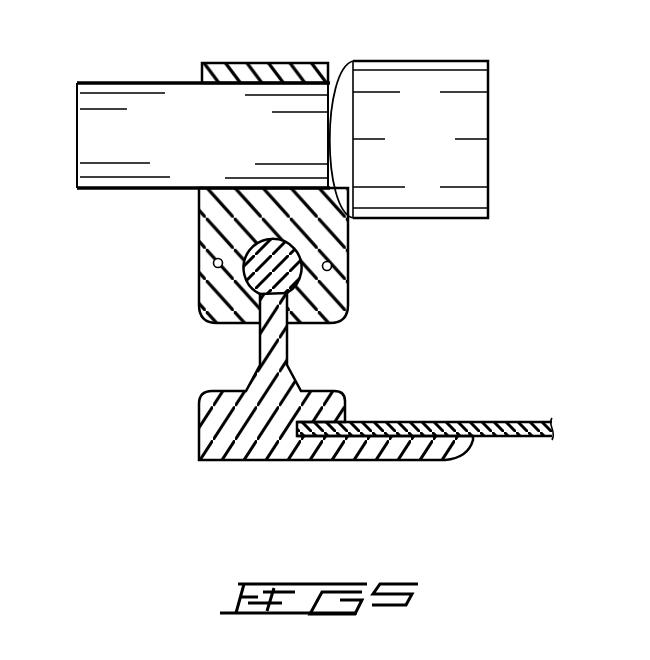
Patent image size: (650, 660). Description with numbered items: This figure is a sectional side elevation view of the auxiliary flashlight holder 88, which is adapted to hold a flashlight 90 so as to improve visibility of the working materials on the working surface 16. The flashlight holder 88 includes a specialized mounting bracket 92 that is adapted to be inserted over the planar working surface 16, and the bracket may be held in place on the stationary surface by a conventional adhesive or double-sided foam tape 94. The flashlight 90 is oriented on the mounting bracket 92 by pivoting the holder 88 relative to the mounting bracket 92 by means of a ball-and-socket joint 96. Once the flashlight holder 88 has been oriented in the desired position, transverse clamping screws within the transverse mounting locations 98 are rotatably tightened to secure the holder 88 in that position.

The working surface 16 is at (534, 421).
The auxiliary flashlight holder 88 is at (232, 68).
The flashlight 90 is at (186, 152).
The mounting bracket 92 is at (208, 452).
The double-sided foam tape 94 is at (470, 437).
The ball-and-socket joint 96 is at (246, 296).
The transverse mounting locations 98 is at (214, 260).